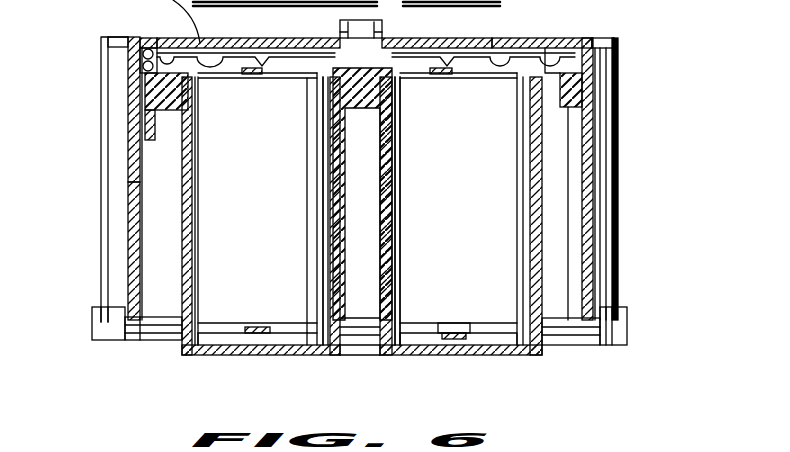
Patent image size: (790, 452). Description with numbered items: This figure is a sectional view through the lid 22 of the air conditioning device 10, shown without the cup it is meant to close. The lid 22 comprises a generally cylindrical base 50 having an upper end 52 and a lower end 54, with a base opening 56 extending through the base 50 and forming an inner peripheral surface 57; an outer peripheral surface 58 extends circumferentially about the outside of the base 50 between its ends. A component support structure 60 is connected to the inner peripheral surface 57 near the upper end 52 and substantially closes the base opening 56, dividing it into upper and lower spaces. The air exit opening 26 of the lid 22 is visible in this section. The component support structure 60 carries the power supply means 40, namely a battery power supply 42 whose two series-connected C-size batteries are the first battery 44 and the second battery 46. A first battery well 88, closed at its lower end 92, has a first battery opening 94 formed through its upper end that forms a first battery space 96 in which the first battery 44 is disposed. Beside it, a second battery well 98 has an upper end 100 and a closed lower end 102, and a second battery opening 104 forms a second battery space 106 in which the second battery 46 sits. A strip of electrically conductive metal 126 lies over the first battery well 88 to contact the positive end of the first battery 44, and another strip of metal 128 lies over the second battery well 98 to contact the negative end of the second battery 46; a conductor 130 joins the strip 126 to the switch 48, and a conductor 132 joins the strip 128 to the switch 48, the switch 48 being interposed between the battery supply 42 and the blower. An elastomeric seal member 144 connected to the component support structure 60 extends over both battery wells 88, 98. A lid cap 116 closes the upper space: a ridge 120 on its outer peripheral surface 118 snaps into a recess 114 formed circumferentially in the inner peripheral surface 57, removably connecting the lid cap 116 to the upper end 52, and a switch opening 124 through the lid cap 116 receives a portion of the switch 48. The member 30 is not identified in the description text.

The air conditioning device 10 is at (628, 40).
The lid 22 is at (108, 192).
The air exit opening 26 is at (357, 293).
The right end base member 30 is at (562, 293).
The power supply means 40 is at (225, 295).
The battery power supply 42 is at (540, 152).
The first battery 44 is at (213, 180).
The second battery 46 is at (408, 172).
The switch 48 is at (377, 27).
The base 50 is at (107, 255).
The upper end of the base 52 is at (118, 37).
The lower end of the base 54 is at (103, 342).
The base opening 56 is at (147, 317).
The inner peripheral surface 57 is at (135, 247).
The outer peripheral surface 58 is at (620, 80).
The component support structure 60 is at (165, 128).
The first battery well 88 is at (193, 237).
The lower end of the first battery well 92 is at (232, 353).
The first battery opening 94 is at (192, 212).
The first battery space 96 is at (284, 293).
The second battery well 98 is at (430, 355).
The upper end of the second battery well 100 is at (395, 40).
The lower end of the second battery well 102 is at (383, 352).
The second battery opening 104 is at (395, 212).
The second battery space 106 is at (477, 292).
The recess 114 is at (168, 40).
The lid cap 116 is at (497, 38).
The outer peripheral surface of the lid cap 118 is at (133, 43).
The ridge 120 is at (597, 40).
The switch opening 124 is at (345, 45).
The strip of electrically conductive metal 126 is at (293, 72).
The strip of metal 128 is at (437, 72).
The conductor 130 is at (333, 65).
The conductor 132 is at (393, 73).
The elastomeric seal member 144 is at (245, 70).